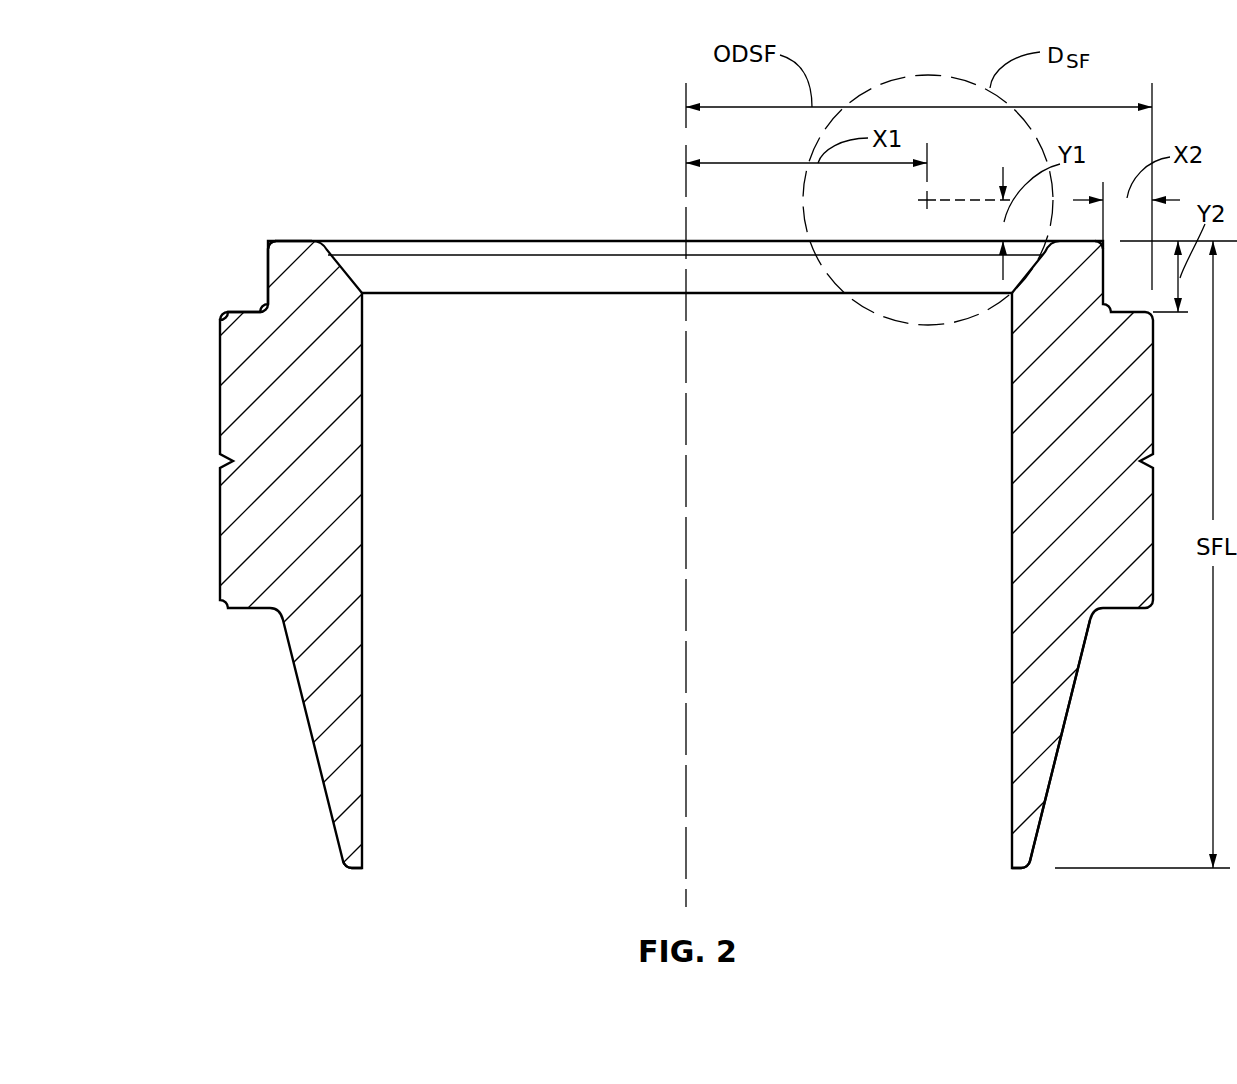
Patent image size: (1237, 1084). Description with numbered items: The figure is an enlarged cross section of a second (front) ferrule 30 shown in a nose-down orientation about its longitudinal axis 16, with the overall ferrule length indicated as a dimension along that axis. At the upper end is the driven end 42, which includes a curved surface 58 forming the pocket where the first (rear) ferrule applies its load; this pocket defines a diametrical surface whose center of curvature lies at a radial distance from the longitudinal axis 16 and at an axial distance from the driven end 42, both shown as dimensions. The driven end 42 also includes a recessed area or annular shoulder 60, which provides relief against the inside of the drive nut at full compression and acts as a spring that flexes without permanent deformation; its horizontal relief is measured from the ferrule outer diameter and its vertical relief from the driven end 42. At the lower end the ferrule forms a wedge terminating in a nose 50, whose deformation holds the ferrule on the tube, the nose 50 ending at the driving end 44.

The longitudinal axis 16 is at (686, 218).
The second (front) ferrule 30 is at (218, 410).
The driven end 42 is at (297, 240).
The driving end 44 is at (1020, 870).
The nose 50 is at (1043, 829).
The curved surface 58 is at (337, 272).
The annular shoulder 60 is at (228, 259).